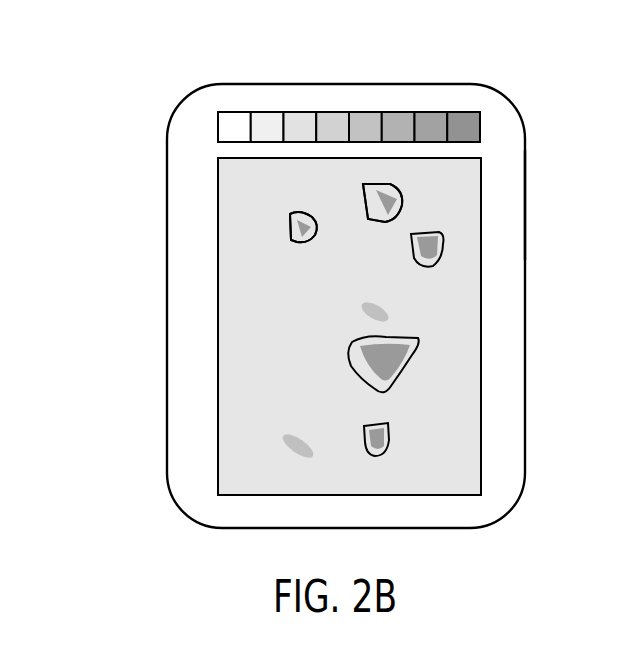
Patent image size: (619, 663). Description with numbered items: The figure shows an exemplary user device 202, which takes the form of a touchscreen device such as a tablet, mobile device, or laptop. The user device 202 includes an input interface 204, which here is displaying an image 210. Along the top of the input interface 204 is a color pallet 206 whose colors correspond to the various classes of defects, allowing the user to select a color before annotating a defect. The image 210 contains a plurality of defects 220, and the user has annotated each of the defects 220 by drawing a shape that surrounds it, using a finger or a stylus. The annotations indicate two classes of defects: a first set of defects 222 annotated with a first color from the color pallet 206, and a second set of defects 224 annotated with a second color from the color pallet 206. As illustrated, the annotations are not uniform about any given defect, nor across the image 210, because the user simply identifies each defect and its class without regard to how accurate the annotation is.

The user device 202 is at (168, 137).
The input interface 204 is at (481, 290).
The color pallet 206 is at (478, 110).
The image 210 is at (481, 213).
The plurality of defects 220 is at (413, 258).
The first set of defects 222 is at (363, 190).
The second set of defects 224 is at (305, 456).